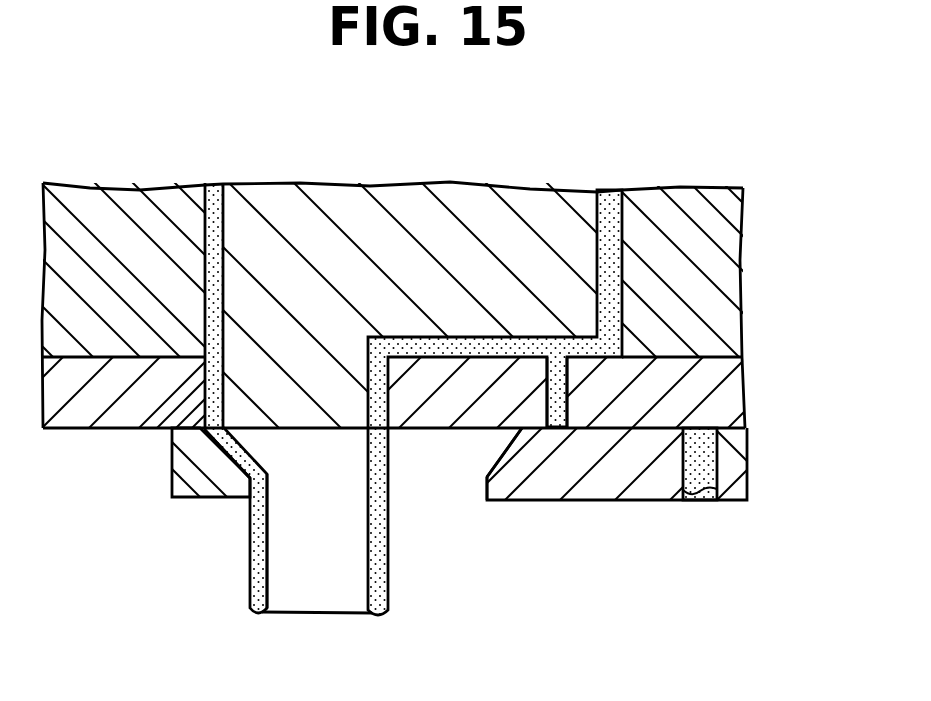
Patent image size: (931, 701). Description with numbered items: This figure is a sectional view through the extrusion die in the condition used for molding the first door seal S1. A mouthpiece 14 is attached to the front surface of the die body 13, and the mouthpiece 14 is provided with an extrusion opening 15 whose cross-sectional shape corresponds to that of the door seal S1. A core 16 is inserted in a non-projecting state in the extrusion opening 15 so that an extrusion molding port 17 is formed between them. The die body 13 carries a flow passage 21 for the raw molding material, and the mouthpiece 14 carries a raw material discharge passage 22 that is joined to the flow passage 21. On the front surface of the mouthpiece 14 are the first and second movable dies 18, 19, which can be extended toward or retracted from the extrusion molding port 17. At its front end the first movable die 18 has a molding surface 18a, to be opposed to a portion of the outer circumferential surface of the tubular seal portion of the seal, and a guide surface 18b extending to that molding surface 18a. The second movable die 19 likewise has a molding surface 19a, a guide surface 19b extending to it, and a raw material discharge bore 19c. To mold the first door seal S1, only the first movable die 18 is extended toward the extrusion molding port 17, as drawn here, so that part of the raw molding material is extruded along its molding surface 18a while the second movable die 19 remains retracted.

The die body 13 is at (723, 284).
The mouthpiece 14 is at (722, 405).
The extrusion opening 15 is at (390, 458).
The core 16 is at (298, 410).
The extrusion molding port 17 is at (153, 431).
The first movable die 18 is at (175, 487).
The molding surface 18a is at (250, 550).
The guide surface 18b is at (237, 462).
The second movable die 19 is at (647, 485).
The molding surface 19a is at (487, 485).
The guide surface 19b is at (512, 445).
The raw material discharge bore 19c is at (703, 495).
The flow passage 21 is at (205, 247).
The raw material discharge passage 22 is at (558, 395).
The first door seal S1 is at (378, 563).